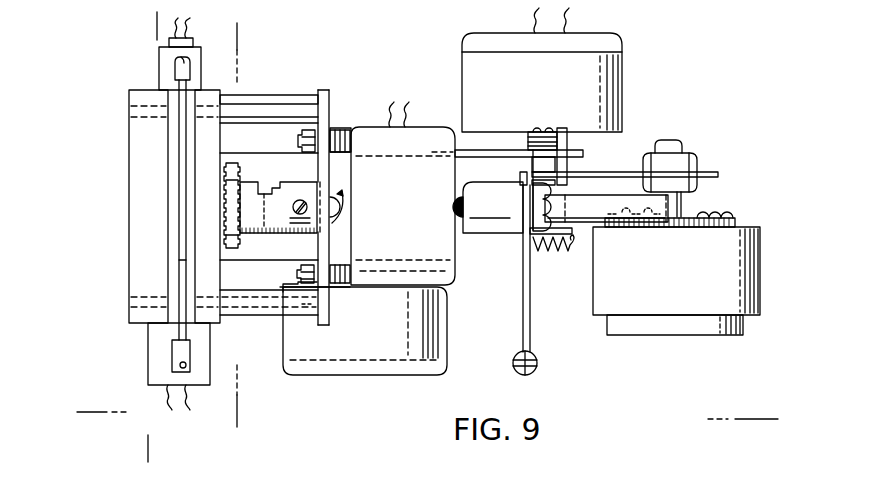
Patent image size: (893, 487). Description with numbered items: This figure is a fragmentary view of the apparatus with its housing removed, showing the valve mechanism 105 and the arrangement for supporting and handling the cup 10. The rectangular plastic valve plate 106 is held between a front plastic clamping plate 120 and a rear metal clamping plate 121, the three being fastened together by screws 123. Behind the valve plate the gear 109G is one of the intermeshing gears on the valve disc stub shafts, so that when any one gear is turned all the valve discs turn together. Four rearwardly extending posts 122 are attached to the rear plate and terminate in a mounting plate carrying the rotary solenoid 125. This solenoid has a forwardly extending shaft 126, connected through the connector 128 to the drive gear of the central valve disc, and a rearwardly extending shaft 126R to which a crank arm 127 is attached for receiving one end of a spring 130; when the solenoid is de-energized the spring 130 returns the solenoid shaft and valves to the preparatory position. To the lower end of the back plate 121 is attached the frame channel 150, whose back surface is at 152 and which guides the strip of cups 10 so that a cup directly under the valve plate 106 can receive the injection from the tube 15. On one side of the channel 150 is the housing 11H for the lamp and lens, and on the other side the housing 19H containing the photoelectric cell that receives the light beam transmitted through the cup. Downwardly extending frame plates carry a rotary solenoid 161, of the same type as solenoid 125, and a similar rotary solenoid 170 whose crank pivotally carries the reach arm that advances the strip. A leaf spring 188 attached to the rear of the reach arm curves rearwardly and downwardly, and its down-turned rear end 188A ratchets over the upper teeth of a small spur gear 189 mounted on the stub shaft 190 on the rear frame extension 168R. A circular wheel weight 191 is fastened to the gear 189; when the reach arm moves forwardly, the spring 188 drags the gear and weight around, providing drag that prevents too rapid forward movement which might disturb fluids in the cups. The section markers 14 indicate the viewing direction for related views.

The cup 10 is at (85, 432).
The section line 14 is at (150, 25).
The tube 15 is at (240, 42).
The housing 19H is at (159, 70).
The housing 11H is at (157, 352).
The valve plate 106 is at (191, 91).
The valve mechanism 105 is at (251, 89).
The front plastic clamping plate 120 is at (158, 157).
The rear metal clamping plate 121 is at (218, 157).
The posts 122 is at (274, 108).
The screws 123 is at (128, 107).
The gear 109G is at (239, 172).
The connector 128 is at (290, 233).
The shaft 126 is at (348, 208).
The rotary solenoid 125 is at (410, 247).
The rotary solenoid 161 is at (395, 342).
The rotary solenoid 170 is at (583, 94).
The shaft 126R is at (468, 188).
The frame channel 150 is at (492, 245).
The crank arm 127 is at (531, 317).
The spring 130 is at (531, 359).
The back surface 152 is at (542, 254).
The rear frame extension 168R is at (712, 172).
The stub shaft 190 is at (680, 148).
The down-turned rear end 188A is at (686, 206).
The leaf spring 188 is at (598, 216).
The spur gear 189 is at (736, 221).
The wheel weight 191 is at (697, 287).